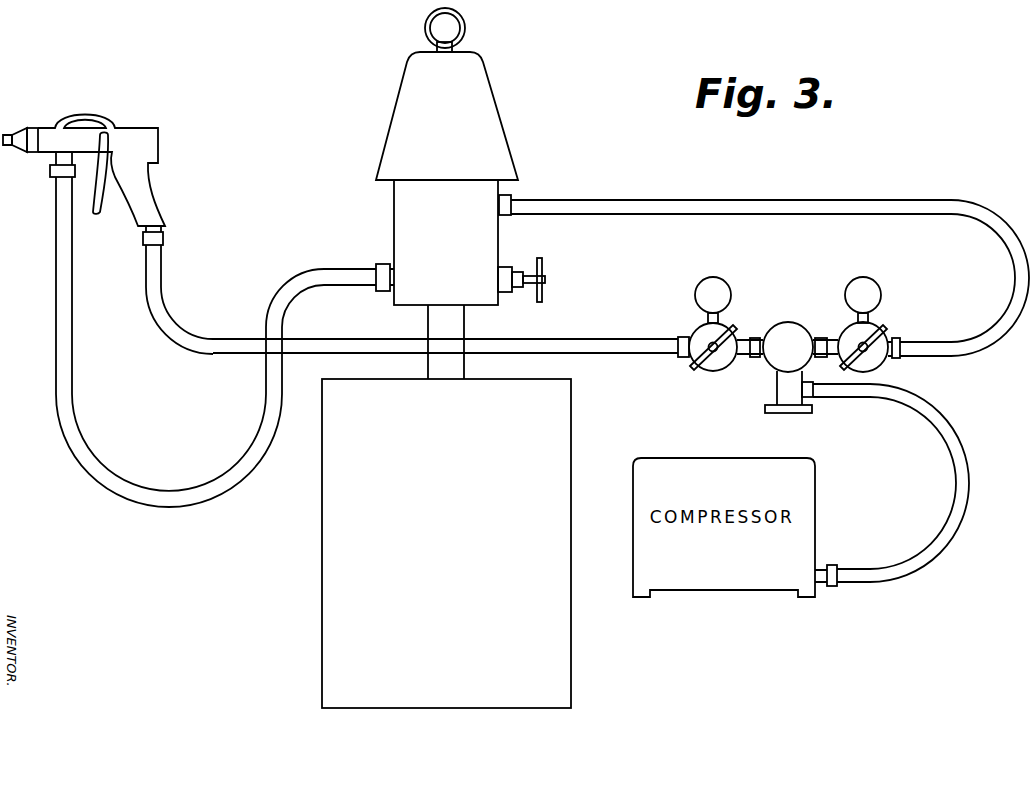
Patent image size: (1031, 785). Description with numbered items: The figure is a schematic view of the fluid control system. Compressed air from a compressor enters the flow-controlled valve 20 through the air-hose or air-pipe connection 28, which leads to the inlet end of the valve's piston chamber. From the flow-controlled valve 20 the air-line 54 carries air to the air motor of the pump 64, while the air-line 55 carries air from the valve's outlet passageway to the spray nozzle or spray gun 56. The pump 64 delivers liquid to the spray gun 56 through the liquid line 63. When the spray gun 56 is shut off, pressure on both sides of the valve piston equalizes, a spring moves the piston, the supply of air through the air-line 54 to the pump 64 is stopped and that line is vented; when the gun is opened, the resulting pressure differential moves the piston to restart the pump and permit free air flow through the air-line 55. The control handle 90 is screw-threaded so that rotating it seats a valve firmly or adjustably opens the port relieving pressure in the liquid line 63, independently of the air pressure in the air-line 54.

The spray gun 56 is at (130, 128).
The liquid line 63 is at (327, 268).
The air-line 55 is at (624, 350).
The pump 64 is at (497, 113).
The control handle 90 is at (545, 264).
The air-line 54 is at (767, 200).
The flow-controlled valve 20 is at (784, 330).
The air-hose connection 28 is at (816, 396).